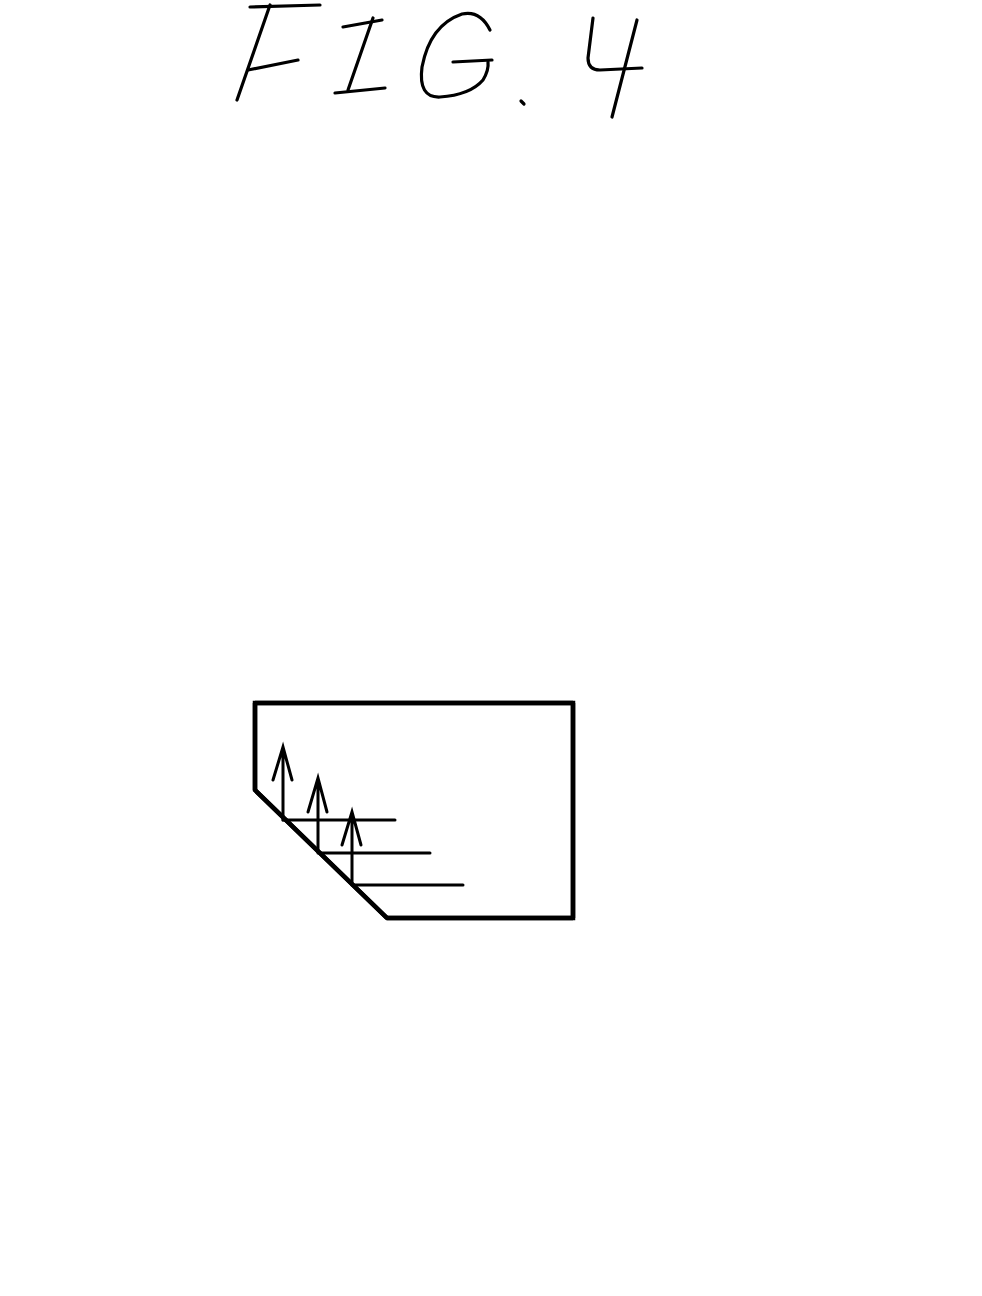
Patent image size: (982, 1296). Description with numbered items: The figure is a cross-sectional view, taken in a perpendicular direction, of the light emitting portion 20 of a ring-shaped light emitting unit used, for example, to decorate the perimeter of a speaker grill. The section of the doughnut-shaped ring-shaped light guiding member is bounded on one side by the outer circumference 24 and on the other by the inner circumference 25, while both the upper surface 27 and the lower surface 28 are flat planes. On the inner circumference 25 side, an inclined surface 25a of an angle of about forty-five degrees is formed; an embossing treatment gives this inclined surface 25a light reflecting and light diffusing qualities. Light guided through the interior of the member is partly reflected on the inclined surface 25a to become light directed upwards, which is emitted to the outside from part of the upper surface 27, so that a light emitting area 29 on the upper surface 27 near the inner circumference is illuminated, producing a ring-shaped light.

The light emitting portion 20 is at (522, 868).
The outer circumference 24 is at (573, 817).
The inner circumference 25 is at (255, 752).
The inclined surface 25a is at (337, 868).
The upper surface 27 is at (478, 703).
The lower surface 28 is at (460, 918).
The light emitting area 29 is at (405, 682).